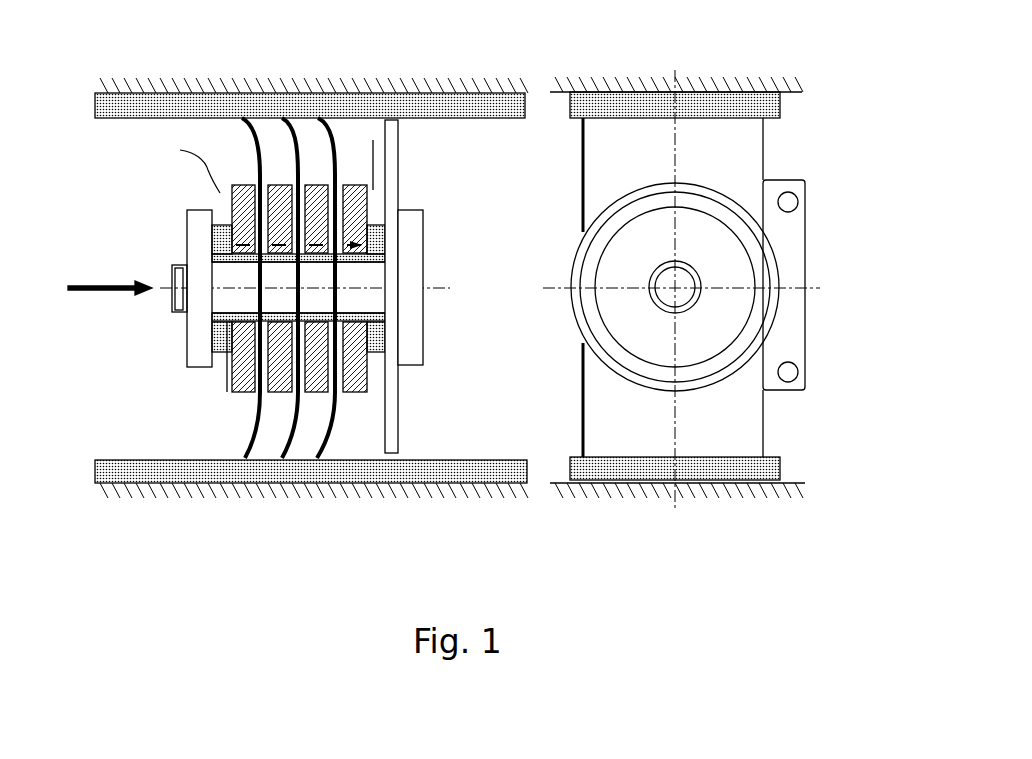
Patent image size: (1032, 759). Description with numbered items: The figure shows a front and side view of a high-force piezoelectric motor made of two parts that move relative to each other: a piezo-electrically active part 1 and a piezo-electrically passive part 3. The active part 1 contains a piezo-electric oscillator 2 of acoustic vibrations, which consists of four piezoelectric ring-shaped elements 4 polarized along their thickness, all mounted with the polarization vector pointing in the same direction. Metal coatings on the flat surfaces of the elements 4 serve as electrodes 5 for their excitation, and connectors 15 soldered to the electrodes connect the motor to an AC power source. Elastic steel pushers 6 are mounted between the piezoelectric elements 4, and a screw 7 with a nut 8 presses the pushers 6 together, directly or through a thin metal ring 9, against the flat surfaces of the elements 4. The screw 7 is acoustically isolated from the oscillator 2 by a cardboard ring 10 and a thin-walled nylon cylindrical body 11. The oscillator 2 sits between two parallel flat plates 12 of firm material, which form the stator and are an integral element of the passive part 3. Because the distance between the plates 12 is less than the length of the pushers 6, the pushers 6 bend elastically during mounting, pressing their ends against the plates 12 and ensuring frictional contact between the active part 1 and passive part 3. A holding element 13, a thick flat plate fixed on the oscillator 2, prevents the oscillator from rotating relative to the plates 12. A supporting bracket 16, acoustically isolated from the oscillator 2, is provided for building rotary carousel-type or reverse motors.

The piezo-electrically active part 1 is at (180, 212).
The piezo-electric oscillator 2 is at (233, 399).
The piezo-electrically passive part 3 is at (425, 130).
The piezoelectric ring-shaped element 4 is at (350, 370).
The electrode 5 is at (227, 377).
The spring-loaded pusher 6 is at (250, 425).
The screw 7 is at (368, 298).
The nut 8 is at (195, 320).
The thin metal ring 9 is at (288, 215).
The ring 10 is at (218, 232).
The thin-walled cylindrical body 11 is at (405, 367).
The flat plate 12 is at (491, 107).
The holding element 13 is at (393, 138).
The connector 15 is at (373, 177).
The supporting bracket 16 is at (795, 300).